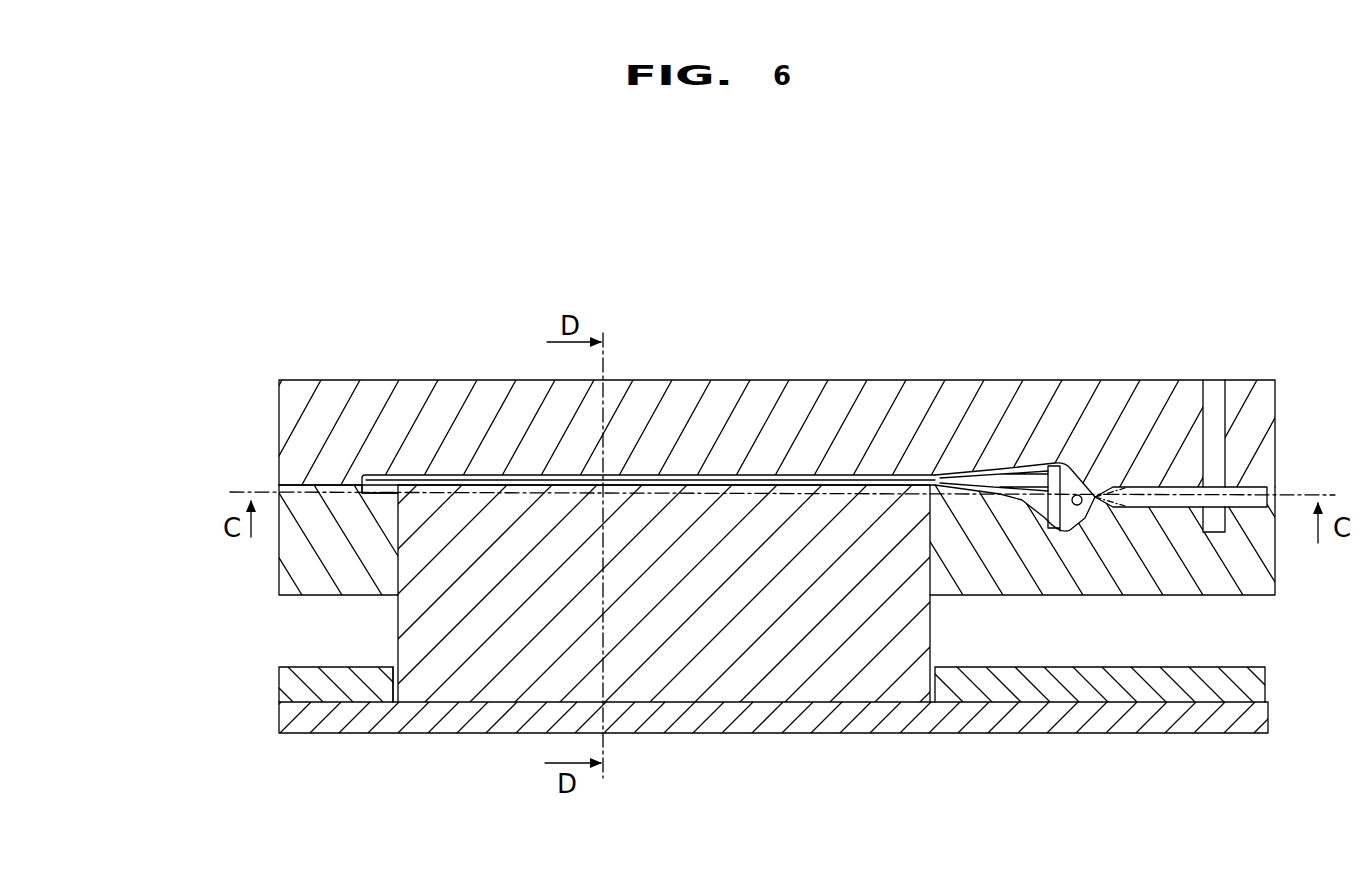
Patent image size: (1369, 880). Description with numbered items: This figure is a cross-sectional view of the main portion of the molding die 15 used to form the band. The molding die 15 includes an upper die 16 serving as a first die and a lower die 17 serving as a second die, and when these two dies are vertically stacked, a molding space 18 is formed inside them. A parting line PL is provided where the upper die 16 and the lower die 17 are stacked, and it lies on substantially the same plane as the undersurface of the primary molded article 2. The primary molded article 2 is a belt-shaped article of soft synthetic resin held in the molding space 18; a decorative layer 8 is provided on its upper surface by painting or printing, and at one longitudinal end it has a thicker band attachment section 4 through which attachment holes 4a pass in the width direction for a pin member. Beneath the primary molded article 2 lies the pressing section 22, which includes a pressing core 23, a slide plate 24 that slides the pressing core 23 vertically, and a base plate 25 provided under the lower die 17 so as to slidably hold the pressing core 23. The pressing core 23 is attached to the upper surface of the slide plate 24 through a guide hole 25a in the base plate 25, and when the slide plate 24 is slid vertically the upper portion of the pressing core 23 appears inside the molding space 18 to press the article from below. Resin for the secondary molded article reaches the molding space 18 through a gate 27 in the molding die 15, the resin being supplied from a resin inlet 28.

The primary molded article 2 is at (683, 477).
The band attachment section 4 is at (1036, 480).
The attachment holes 4a is at (1074, 492).
The decorative layer 8 is at (997, 470).
The molding die 15 is at (170, 410).
The upper die 16 is at (295, 441).
The lower die 17 is at (295, 557).
The molding spaces 18 is at (380, 477).
The pressing section 22 is at (982, 820).
The pressing cores 23 is at (805, 685).
The slide plate 24 is at (885, 720).
The base plate 25 is at (958, 687).
The guide holes 25a is at (395, 683).
The gates 27 is at (1097, 497).
The resin inlet 28 is at (1213, 383).
The parting line PL is at (312, 486).